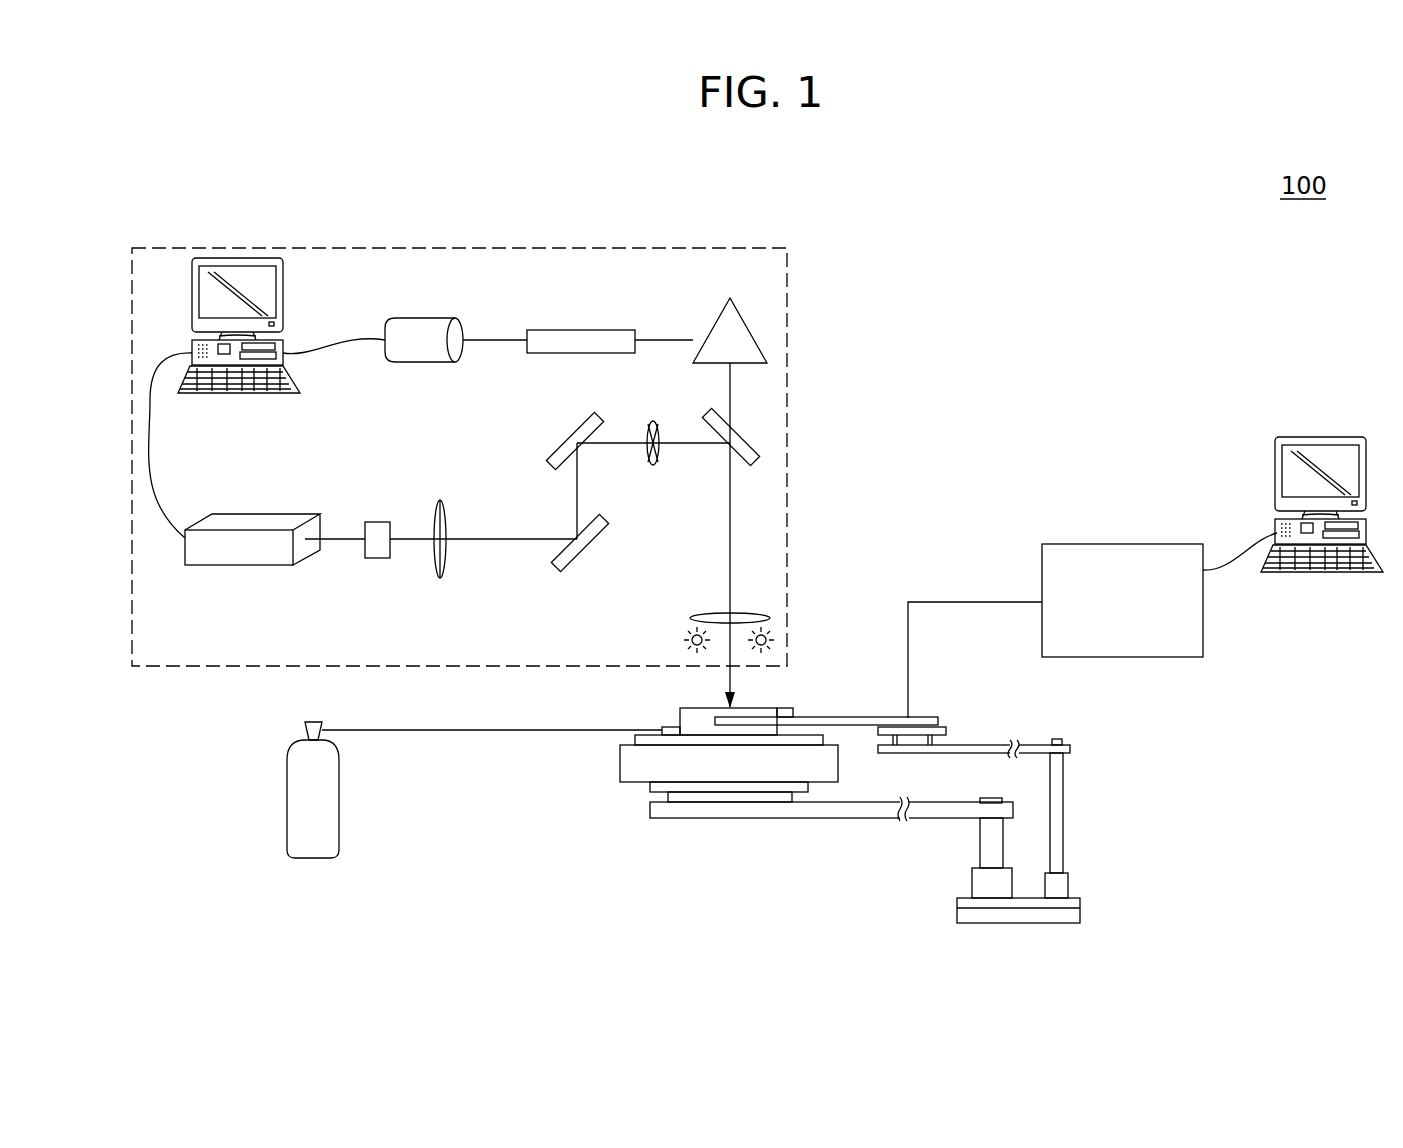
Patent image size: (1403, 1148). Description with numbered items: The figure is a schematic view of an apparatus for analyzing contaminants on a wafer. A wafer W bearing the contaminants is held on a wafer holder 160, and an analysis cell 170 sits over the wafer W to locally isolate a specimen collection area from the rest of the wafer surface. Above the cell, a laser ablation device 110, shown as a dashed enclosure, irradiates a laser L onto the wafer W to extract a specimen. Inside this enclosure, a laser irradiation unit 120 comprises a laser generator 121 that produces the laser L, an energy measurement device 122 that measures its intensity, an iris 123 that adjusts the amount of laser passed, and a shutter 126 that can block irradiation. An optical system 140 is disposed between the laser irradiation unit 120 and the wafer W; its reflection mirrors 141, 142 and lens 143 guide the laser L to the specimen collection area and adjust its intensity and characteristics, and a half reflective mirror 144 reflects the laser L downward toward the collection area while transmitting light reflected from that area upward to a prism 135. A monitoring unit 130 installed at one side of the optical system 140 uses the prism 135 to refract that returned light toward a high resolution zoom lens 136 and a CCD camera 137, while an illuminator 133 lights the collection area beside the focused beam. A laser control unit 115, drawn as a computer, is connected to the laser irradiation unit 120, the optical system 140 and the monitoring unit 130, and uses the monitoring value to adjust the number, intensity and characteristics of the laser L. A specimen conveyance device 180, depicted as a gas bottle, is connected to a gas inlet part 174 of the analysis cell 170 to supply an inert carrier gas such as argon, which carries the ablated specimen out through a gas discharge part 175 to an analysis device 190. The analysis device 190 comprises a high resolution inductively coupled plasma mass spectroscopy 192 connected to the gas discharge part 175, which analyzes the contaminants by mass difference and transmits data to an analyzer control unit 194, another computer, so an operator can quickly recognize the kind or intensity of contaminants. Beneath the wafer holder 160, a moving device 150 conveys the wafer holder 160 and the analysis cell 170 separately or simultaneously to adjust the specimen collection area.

The laser ablation device 110 is at (787, 274).
The laser control unit 115 is at (283, 292).
The laser irradiation unit 120 is at (313, 580).
The laser generator 121 is at (273, 520).
The energy measurement device 122 is at (378, 549).
The iris 123 is at (447, 565).
The shutter 126 is at (653, 465).
The monitoring unit 130 is at (603, 303).
The illuminator 133 is at (771, 634).
The prism 135 is at (723, 325).
The high resolution zoom lens 136 is at (559, 335).
The CCD camera 137 is at (428, 327).
The optical system 140 is at (740, 555).
The reflection mirror 141 is at (590, 540).
The reflection mirror 142 is at (571, 431).
The lens 143 is at (742, 617).
The half reflective mirror 144 is at (743, 434).
The laser L is at (730, 512).
The moving device 150 is at (1100, 840).
The wafer holder 160 is at (752, 768).
The analysis cell 170 is at (697, 723).
The gas inlet part 174 is at (664, 728).
The gas discharge part 175 is at (790, 709).
The wafer W is at (635, 742).
The specimen conveyance device 180 is at (327, 800).
The analysis device 190 is at (1237, 648).
The high resolution inductively coupled plasma mass spectroscopy 192 is at (1110, 557).
The analyzer control unit 194 is at (1320, 437).